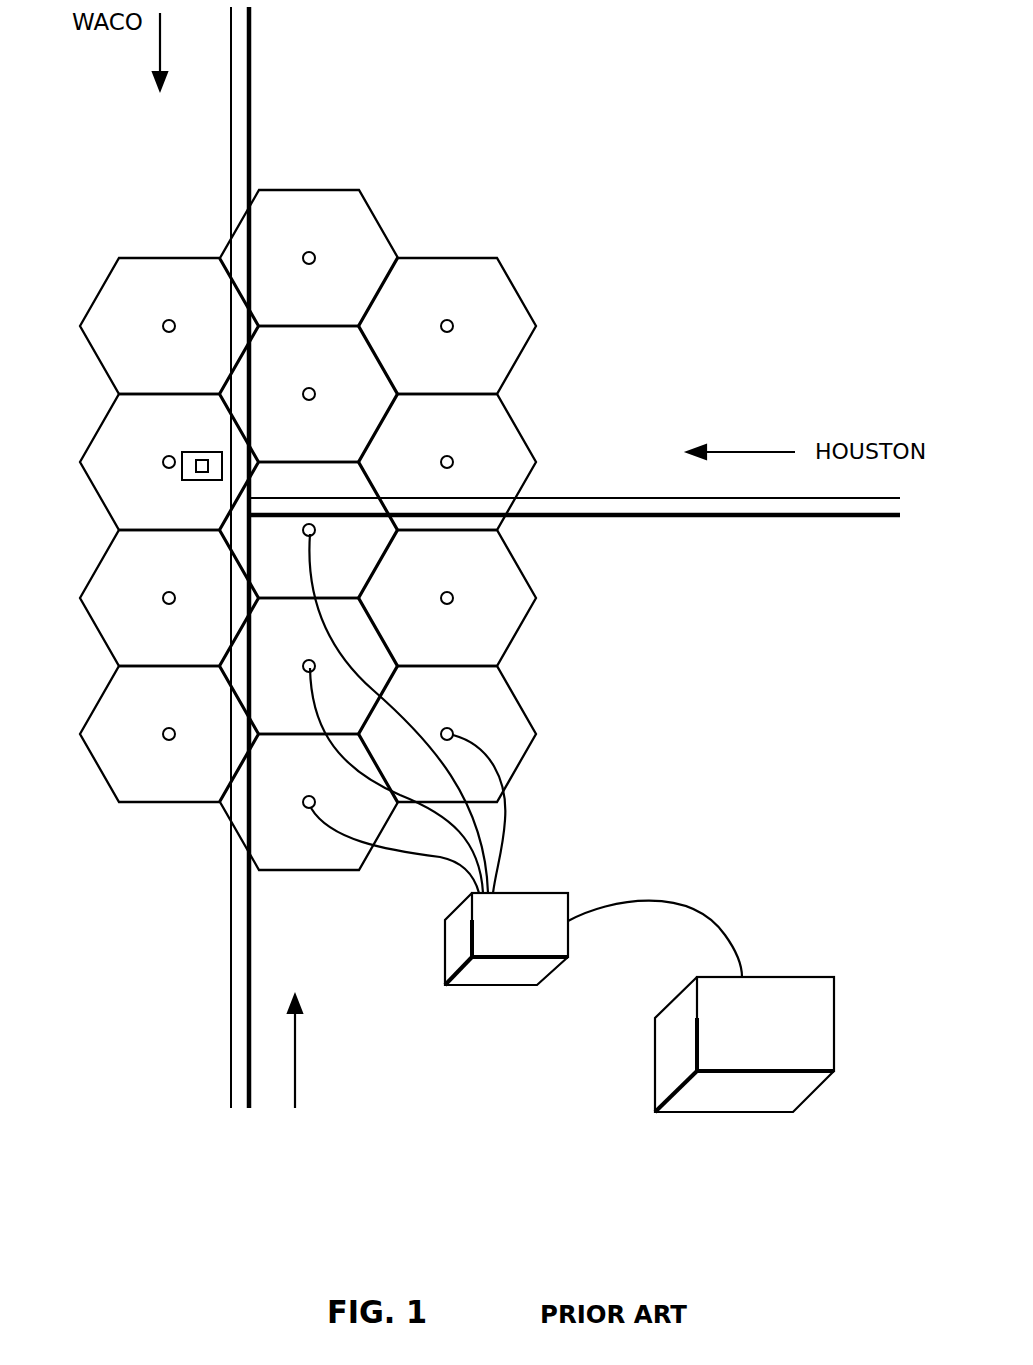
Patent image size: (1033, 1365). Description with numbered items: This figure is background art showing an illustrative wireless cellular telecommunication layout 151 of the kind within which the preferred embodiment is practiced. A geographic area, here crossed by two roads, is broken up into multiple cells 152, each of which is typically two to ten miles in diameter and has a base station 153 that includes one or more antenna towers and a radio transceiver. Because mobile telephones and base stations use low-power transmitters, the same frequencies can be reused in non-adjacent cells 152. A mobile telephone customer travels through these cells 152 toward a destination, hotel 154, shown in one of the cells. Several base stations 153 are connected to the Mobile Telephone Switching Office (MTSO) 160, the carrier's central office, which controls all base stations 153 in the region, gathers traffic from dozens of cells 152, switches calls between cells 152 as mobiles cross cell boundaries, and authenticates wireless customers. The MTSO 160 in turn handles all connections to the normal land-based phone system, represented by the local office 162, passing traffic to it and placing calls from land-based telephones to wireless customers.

The cellular telecommunication layout 151 is at (520, 238).
The cell 152 is at (507, 688).
The base station 153 is at (453, 325).
The hotel 154 is at (202, 462).
The Mobile Telephone Switching Office (MTSO) 160 is at (528, 897).
The local office 162 is at (665, 1043).